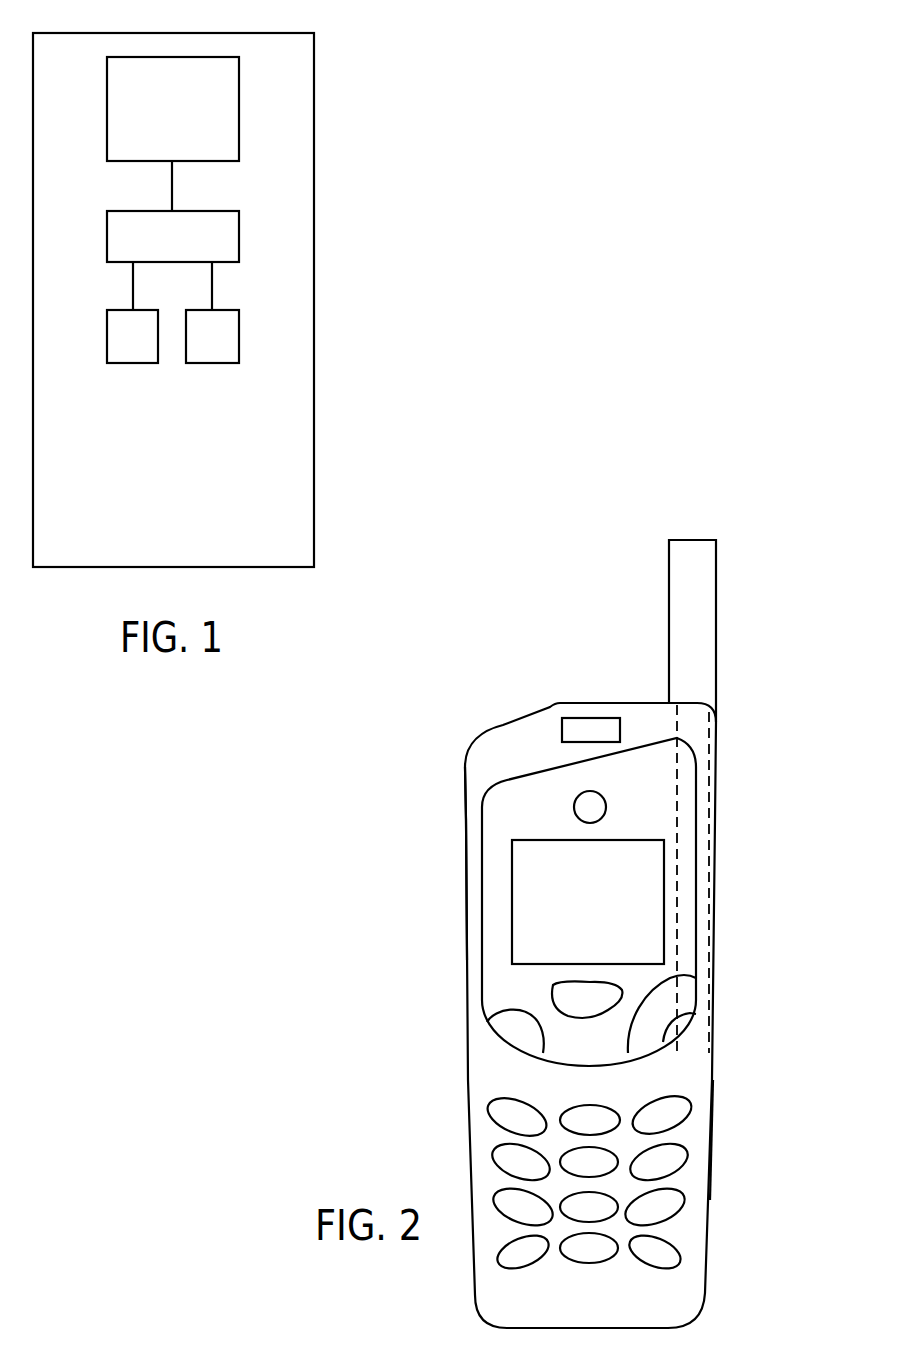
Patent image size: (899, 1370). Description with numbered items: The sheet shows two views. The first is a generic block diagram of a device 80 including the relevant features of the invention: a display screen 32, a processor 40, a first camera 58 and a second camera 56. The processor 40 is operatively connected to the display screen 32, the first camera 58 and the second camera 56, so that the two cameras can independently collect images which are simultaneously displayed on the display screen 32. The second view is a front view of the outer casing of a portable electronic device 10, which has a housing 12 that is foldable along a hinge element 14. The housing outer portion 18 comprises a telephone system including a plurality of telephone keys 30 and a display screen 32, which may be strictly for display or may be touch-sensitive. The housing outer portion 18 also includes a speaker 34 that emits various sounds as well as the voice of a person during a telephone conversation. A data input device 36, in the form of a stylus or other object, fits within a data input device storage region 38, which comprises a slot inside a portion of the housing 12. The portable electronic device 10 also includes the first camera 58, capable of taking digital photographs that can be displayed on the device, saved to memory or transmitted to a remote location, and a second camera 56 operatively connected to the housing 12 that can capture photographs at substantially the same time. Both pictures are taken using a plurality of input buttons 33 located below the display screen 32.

In FIG. 2, the portable electronic device 10 is at (625, 932).
In FIG. 2, the housing 12 is at (688, 1298).
In FIG. 2, the hinge element 14 is at (477, 877).
In FIG. 2, the housing outer portion 18 is at (695, 1177).
In FIG. 2, the telephone keys 30 is at (682, 1110).
In FIG. 1, the display screen 32 is at (187, 127).
In FIG. 2, the display screen 32 is at (657, 863).
In FIG. 2, the input buttons 33 is at (648, 1020).
In FIG. 2, the speaker 34 is at (587, 718).
In FIG. 2, the data input device 36 is at (718, 595).
In FIG. 2, the data input device storage region 38 is at (708, 817).
In FIG. 1, the processor 40 is at (187, 253).
In FIG. 1, the second camera 56 is at (147, 348).
In FIG. 1, the first camera 58 is at (226, 348).
In FIG. 2, the first camera 58 is at (590, 807).
In FIG. 1, the device 80 is at (369, 65).